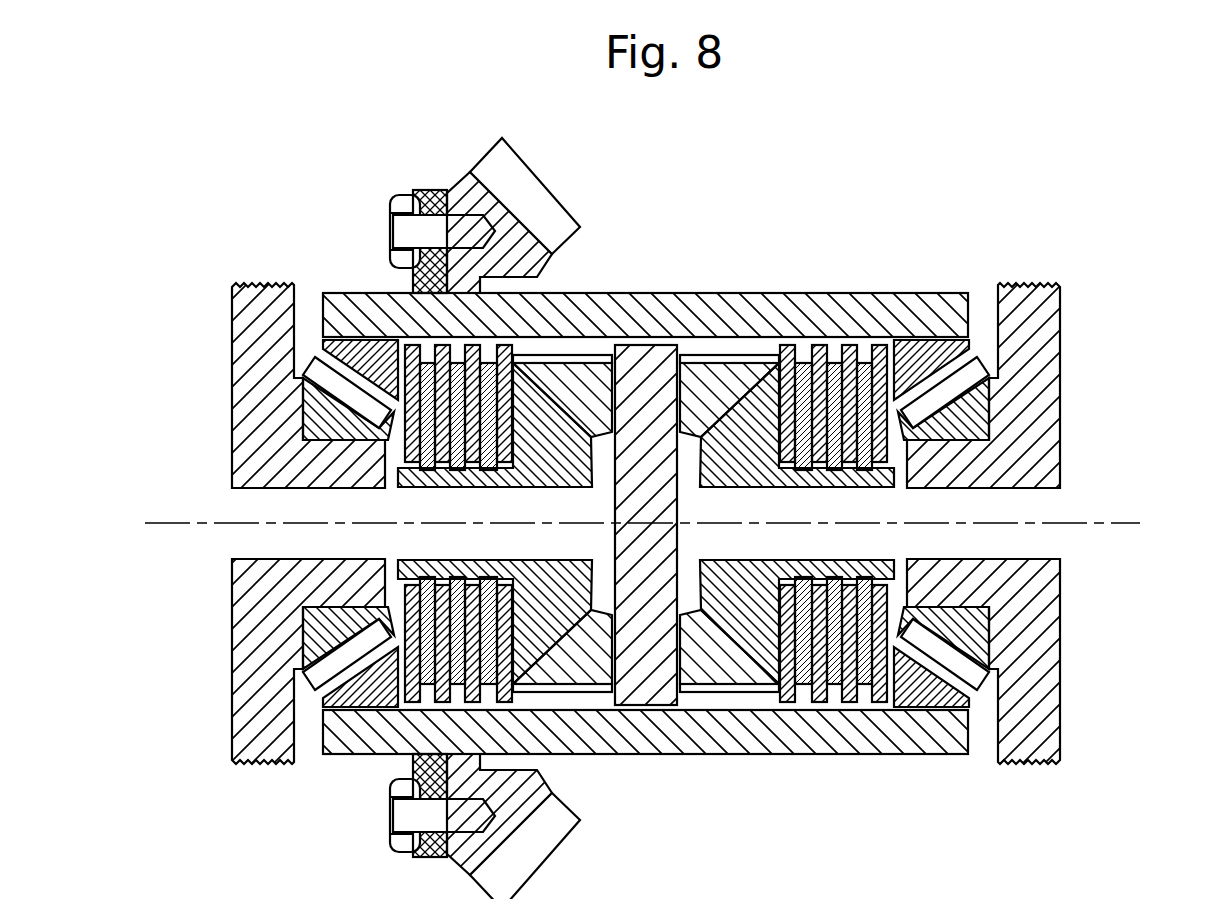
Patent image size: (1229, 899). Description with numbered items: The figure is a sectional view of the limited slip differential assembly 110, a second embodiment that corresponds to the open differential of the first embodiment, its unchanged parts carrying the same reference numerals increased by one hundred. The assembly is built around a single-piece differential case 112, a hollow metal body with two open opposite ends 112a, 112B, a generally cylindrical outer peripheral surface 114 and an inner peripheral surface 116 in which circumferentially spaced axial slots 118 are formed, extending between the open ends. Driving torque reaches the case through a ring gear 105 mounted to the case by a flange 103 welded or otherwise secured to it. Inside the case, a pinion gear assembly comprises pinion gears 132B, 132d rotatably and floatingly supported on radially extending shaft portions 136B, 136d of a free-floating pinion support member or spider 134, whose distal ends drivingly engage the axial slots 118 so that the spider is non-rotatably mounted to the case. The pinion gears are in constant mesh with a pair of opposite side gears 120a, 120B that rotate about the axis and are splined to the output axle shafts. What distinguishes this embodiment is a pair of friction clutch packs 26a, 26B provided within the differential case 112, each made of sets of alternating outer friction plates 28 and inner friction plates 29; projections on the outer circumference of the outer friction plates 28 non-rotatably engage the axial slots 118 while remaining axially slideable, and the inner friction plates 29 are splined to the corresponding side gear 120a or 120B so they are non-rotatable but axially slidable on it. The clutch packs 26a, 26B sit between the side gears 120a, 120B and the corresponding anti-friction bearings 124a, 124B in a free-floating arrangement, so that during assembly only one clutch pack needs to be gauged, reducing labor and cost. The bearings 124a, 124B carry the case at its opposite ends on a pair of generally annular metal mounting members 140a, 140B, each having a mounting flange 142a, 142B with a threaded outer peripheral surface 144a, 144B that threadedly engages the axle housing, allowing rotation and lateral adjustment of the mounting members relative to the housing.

The limited slip differential assembly 110 is at (715, 176).
The flange 103 is at (431, 190).
The ring gear 105 is at (535, 200).
The differential case 112 is at (940, 305).
The open end 112a is at (645, 778).
The open end 112B is at (645, 751).
The outer peripheral surface 114 is at (645, 778).
The inner peripheral surface 116 is at (382, 782).
The axial slots 118 is at (710, 518).
The side gear 120a is at (533, 547).
The side gear 120B is at (728, 458).
The bearing 124a is at (310, 702).
The bearing 124B is at (981, 702).
The friction clutch pack 26a is at (392, 447).
The friction clutch pack 26B is at (900, 438).
The outer friction plates 28 is at (440, 352).
The inner friction plates 29 is at (422, 478).
The pinion gear 132B is at (572, 362).
The pinion gear 132d is at (578, 673).
The pinion support member 134 is at (676, 518).
The shaft portion 136B is at (677, 542).
The shaft portion 136d is at (668, 697).
The mounting member 140a is at (221, 537).
The mounting member 140B is at (1055, 497).
The mounting flange 142a is at (275, 537).
The mounting flange 142B is at (1052, 497).
The threaded outer peripheral surface 144a is at (263, 772).
The threaded outer peripheral surface 144B is at (1035, 282).